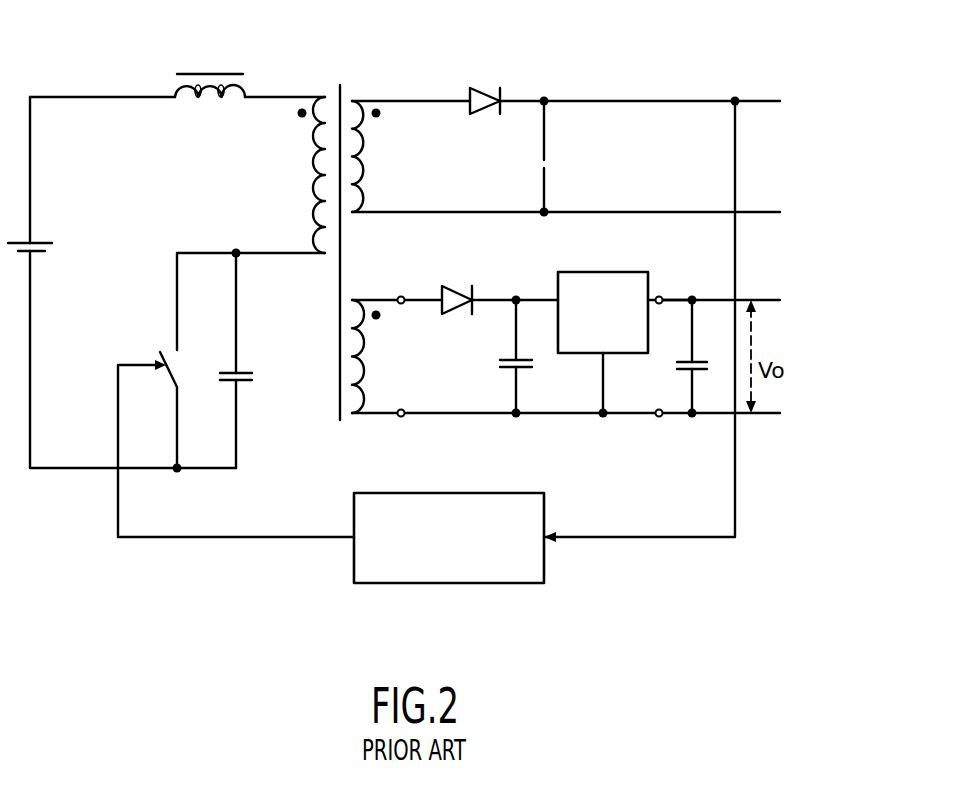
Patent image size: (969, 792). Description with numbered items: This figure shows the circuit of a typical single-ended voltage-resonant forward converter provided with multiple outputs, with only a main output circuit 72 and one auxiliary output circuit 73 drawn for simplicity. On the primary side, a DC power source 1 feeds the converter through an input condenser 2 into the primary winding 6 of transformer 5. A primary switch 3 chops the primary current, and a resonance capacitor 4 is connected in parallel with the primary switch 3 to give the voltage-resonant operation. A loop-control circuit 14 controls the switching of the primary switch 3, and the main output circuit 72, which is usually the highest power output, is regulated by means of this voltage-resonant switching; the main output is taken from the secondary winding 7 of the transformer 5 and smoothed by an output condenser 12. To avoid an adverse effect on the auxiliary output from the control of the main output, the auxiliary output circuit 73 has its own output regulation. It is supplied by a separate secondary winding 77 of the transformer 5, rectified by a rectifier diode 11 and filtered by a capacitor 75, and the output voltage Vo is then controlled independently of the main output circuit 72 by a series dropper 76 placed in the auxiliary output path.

The DC power source 1 is at (38, 212).
The input condenser 2 is at (198, 74).
The primary switch 3 is at (181, 372).
The resonance capacitor 4 is at (252, 375).
The transformer 5 is at (340, 96).
The primary winding 6 is at (311, 178).
The secondary winding 7 is at (360, 161).
The rectifier diode 11 is at (453, 295).
The output condenser 12 is at (706, 366).
The loop-control circuit 14 is at (433, 492).
The main output circuit 72 is at (615, 81).
The auxiliary output circuit 73 is at (673, 280).
The filter capacitor 75 is at (500, 363).
The series dropper 76 is at (603, 272).
The secondary winding 77 is at (362, 359).